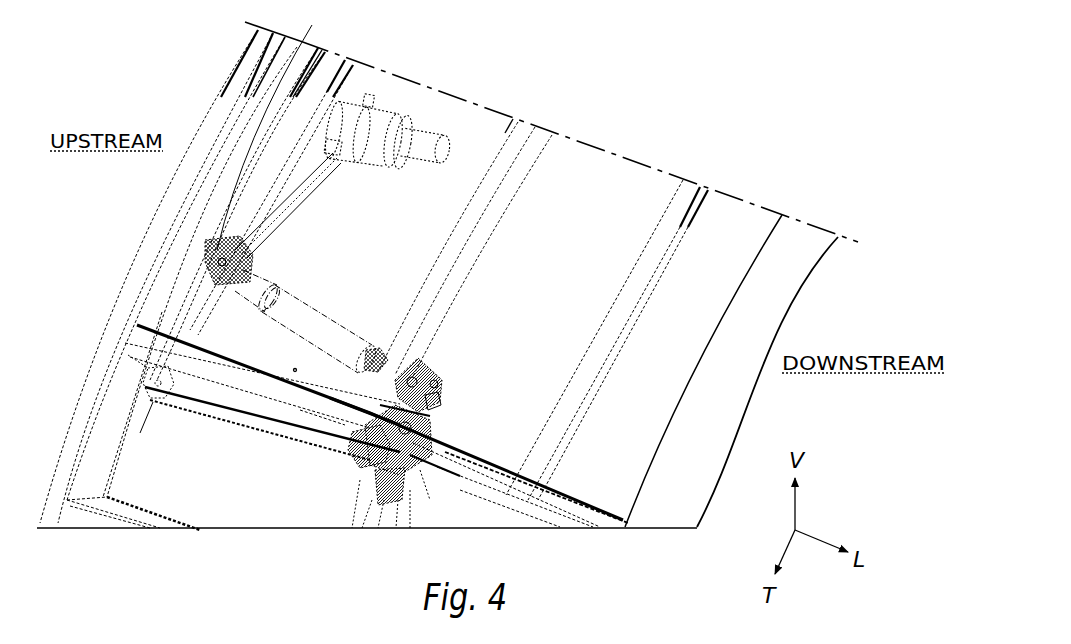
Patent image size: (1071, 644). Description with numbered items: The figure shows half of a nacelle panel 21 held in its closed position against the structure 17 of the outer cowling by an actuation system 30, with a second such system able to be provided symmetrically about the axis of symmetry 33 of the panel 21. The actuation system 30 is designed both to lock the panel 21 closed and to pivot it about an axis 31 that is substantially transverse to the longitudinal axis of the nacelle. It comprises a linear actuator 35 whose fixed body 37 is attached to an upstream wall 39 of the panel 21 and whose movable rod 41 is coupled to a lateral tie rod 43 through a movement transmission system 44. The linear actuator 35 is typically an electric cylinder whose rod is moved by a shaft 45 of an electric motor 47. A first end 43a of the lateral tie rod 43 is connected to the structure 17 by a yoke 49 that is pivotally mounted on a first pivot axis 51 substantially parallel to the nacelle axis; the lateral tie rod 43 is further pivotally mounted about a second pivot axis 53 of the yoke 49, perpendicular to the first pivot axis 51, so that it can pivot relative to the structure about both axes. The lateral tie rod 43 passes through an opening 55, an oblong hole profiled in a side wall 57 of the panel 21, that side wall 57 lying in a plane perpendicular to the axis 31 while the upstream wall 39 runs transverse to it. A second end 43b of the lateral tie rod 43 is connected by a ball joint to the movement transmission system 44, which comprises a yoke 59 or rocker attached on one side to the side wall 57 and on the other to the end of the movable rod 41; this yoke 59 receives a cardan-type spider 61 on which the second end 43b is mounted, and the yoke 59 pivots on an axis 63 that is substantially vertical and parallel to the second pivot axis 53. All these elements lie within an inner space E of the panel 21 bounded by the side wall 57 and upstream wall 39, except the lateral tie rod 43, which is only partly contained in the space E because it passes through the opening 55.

The structure of the outer cowling 17 is at (133, 470).
The panel 21 is at (617, 197).
The actuation system 30 is at (444, 379).
The axis 31 is at (155, 388).
The axis of symmetry 33 is at (742, 200).
The linear actuator 35 is at (327, 327).
The fixed body 37 is at (285, 297).
The upstream wall 39 is at (193, 332).
The movable rod 41 is at (398, 362).
The lateral tie rod 43 is at (470, 461).
The first end of the lateral tie rod 43a is at (420, 483).
The second end of the lateral tie rod 43b is at (430, 416).
The movement transmission system 44 is at (443, 402).
The shaft 45 is at (303, 193).
The electric motor 47 is at (391, 123).
The yoke 49 is at (423, 480).
The first pivot axis 51 is at (378, 517).
The second pivot axis 53 is at (362, 437).
The opening 55 is at (365, 411).
The side wall 57 is at (325, 418).
The yoke 59 is at (414, 380).
The spider 61 is at (436, 383).
The axis 63 is at (417, 439).
The inner space E is at (295, 370).